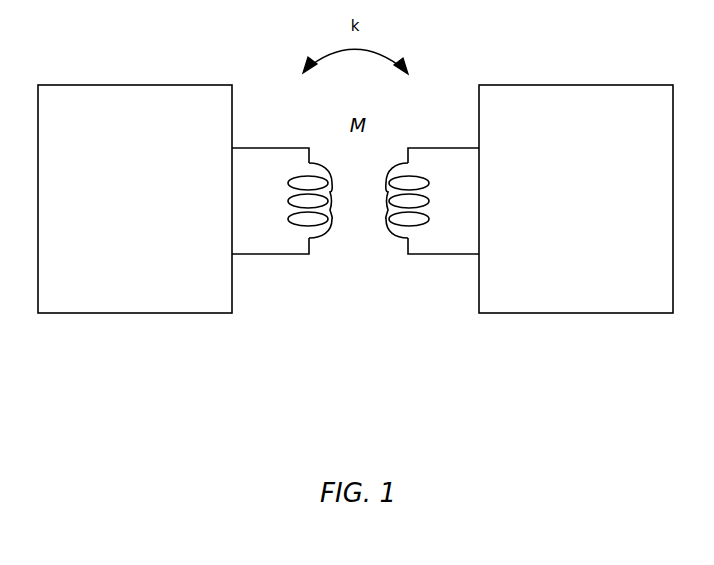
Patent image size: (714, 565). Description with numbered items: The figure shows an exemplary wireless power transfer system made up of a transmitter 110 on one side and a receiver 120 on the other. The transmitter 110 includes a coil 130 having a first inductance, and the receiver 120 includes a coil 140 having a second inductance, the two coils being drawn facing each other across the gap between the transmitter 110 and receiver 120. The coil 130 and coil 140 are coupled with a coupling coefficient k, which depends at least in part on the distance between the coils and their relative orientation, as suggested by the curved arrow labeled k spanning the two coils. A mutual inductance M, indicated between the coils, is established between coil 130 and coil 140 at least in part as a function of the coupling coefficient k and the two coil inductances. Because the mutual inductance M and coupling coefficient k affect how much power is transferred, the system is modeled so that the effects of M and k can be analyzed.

The transmitter 110 is at (135, 199).
The receiver 120 is at (576, 199).
The coil 130 is at (303, 278).
The coil 140 is at (410, 278).